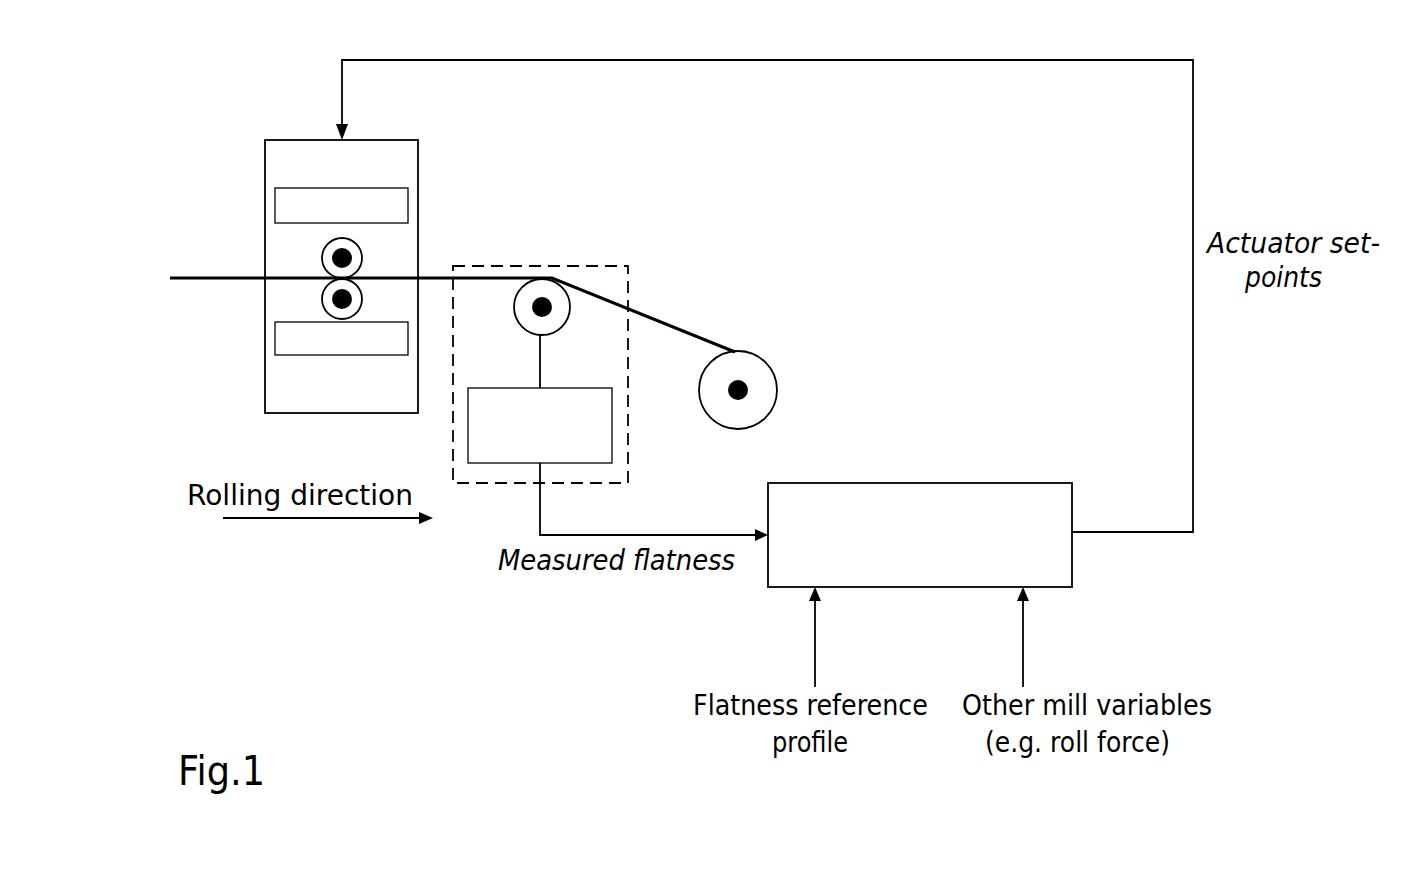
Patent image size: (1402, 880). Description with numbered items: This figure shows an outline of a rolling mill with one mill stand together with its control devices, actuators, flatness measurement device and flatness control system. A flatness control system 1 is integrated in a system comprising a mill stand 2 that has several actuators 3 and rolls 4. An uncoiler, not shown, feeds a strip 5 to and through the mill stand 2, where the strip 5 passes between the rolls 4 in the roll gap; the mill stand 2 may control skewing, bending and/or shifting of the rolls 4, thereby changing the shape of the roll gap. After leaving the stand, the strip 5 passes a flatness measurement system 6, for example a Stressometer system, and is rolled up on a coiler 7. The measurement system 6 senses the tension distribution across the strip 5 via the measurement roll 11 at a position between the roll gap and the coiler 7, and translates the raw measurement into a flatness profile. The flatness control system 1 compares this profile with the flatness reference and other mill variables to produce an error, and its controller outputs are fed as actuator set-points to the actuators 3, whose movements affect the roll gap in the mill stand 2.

The flatness control system 1 is at (935, 482).
The mill stand 2 is at (307, 146).
The actuators 3 is at (290, 347).
The rolls 4 is at (362, 299).
The strip 5 is at (198, 270).
The flatness measurement system 6 is at (628, 288).
The coiler 7 is at (767, 367).
The measurement roll 11 is at (557, 295).